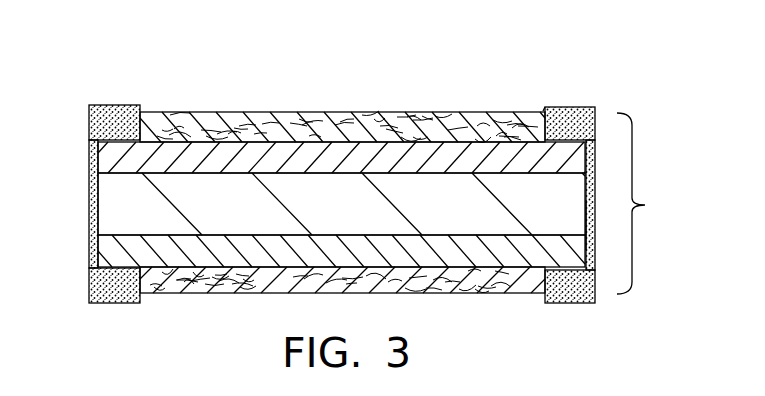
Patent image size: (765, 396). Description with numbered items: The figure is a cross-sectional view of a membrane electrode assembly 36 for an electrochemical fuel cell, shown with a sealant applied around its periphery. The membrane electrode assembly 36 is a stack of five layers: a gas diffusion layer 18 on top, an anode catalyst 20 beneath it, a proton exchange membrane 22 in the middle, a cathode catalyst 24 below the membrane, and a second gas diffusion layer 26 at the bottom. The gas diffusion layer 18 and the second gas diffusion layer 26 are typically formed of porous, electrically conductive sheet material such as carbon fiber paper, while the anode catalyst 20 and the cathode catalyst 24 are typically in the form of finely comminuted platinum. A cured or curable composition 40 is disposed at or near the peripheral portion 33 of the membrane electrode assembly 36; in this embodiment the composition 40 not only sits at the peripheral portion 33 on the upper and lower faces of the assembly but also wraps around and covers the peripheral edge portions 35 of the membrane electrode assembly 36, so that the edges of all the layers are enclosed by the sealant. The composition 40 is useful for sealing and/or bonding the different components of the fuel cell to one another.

The gas diffusion layer 18 is at (219, 127).
The anode catalyst 20 is at (122, 163).
The proton exchange membrane 22 is at (122, 205).
The cathode catalyst 24 is at (115, 248).
The second gas diffusion layer 26 is at (196, 292).
The peripheral portion 33 is at (543, 111).
The peripheral edge portions 35 is at (594, 223).
The membrane electrode assembly 36 is at (650, 203).
The cured or curable composition 40 is at (103, 105).